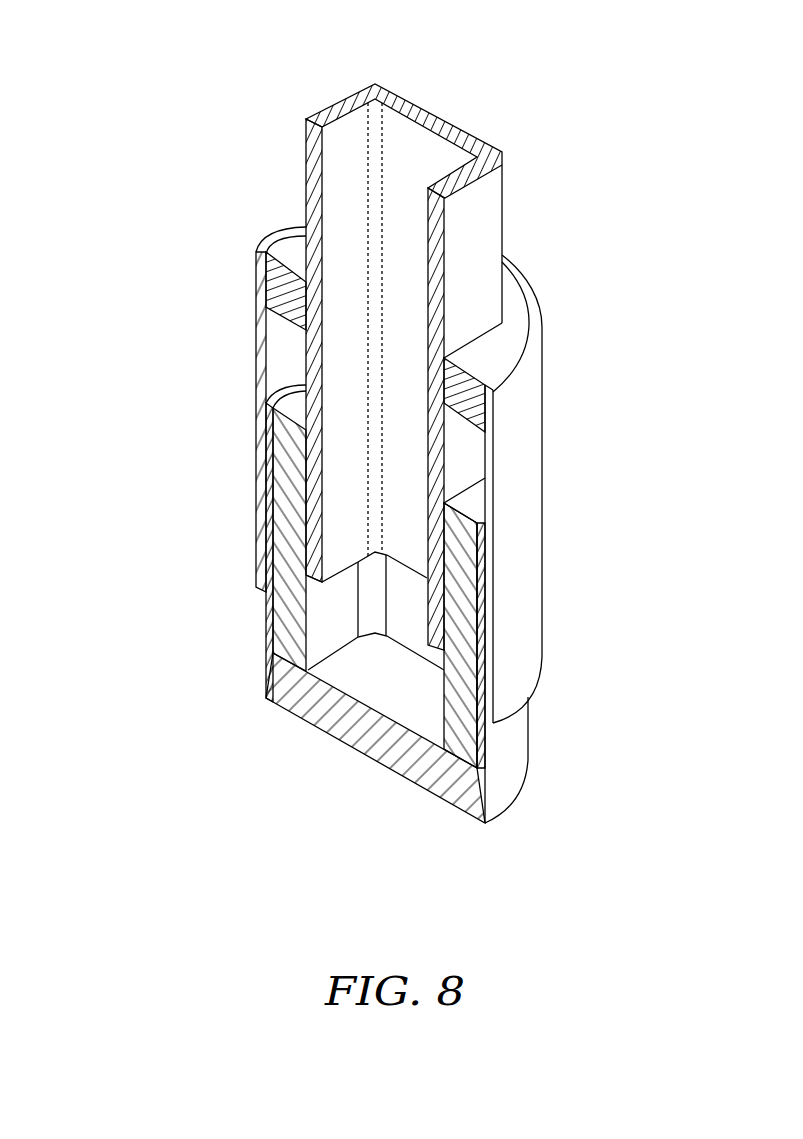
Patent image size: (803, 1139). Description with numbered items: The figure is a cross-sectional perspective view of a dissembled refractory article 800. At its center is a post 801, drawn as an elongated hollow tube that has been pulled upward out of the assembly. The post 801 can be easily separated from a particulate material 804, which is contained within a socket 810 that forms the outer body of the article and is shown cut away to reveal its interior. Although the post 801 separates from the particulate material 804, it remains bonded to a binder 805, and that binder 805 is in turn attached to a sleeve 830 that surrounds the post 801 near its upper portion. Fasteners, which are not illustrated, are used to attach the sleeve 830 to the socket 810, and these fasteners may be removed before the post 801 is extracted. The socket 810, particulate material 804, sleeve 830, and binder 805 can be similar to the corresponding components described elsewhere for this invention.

The dissembled refractory article 800 is at (150, 81).
The post 801 is at (305, 170).
The sleeve 830 is at (255, 362).
The particulate material 804 is at (287, 520).
The binder 805 is at (512, 327).
The socket 810 is at (512, 738).